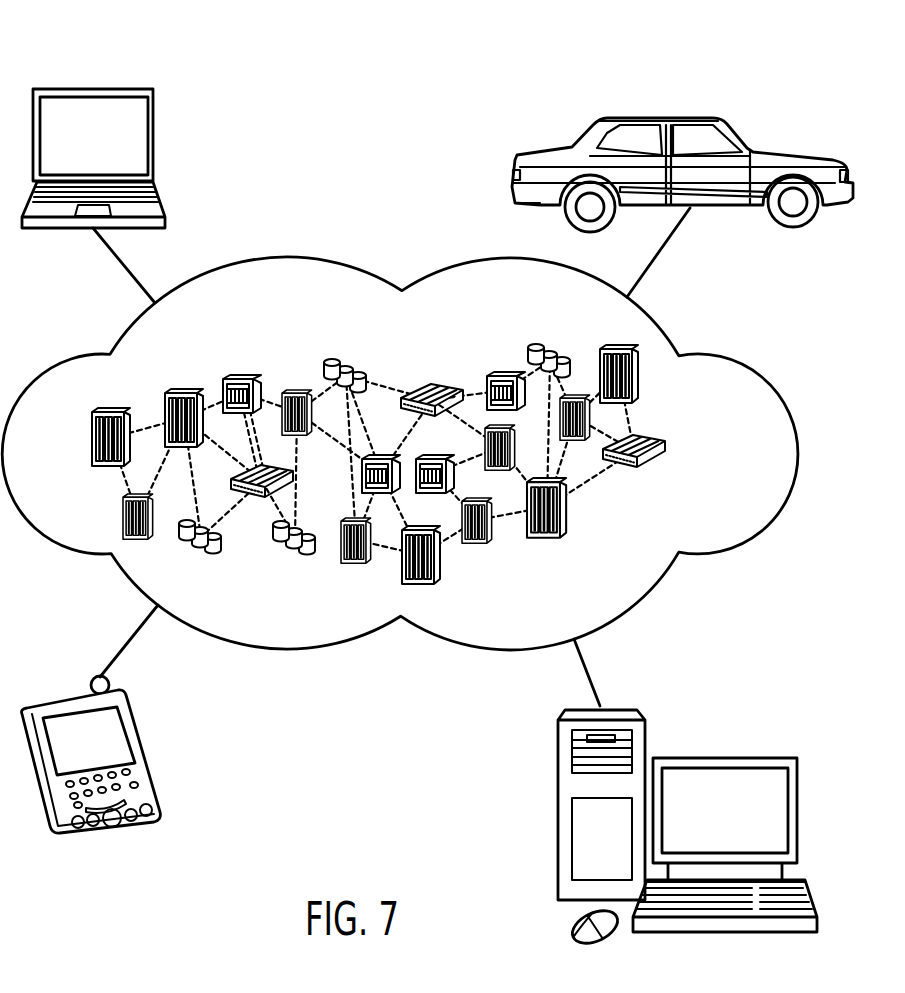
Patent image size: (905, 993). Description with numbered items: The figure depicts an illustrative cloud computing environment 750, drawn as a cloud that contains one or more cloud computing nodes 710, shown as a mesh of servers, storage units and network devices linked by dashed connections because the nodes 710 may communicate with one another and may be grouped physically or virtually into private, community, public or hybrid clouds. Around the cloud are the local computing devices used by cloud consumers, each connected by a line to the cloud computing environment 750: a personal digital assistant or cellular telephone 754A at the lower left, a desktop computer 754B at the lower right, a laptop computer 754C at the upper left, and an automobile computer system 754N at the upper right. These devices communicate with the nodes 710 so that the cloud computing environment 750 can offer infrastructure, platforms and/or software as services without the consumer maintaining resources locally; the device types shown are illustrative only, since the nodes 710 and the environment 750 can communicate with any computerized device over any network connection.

The laptop computer 754C is at (93, 88).
The automobile computer system 754N is at (660, 117).
The cloud computing environment 750 is at (737, 360).
The cloud computing nodes 710 is at (675, 453).
The personal digital assistant or cellular telephone 754A is at (72, 696).
The desktop computer 754B is at (724, 758).